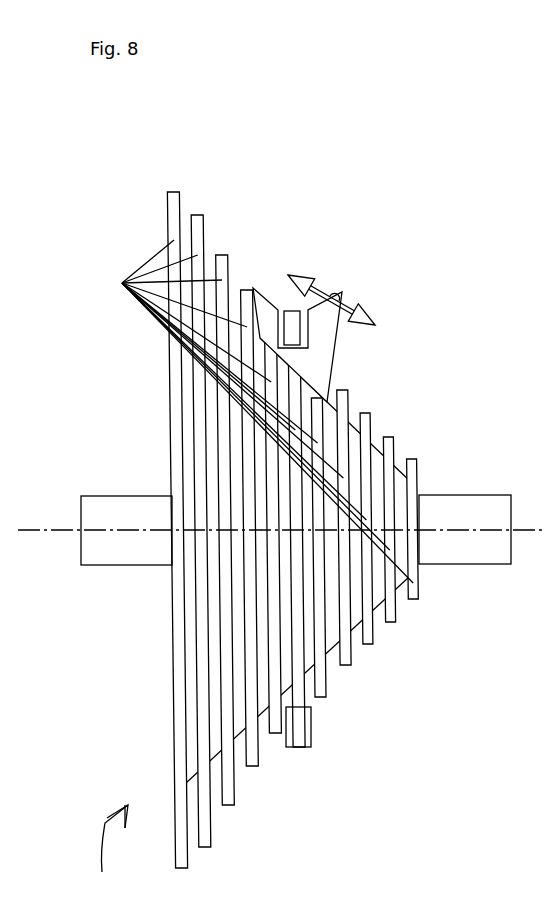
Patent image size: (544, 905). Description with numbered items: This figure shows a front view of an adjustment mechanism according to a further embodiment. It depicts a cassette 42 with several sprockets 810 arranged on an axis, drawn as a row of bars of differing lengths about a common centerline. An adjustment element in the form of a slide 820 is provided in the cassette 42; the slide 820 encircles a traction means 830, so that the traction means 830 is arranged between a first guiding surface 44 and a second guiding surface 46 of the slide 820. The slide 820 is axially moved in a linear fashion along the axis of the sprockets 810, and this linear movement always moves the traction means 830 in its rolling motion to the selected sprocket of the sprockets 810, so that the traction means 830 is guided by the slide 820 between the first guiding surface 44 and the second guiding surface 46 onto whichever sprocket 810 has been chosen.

The cassette 42 is at (102, 855).
The first guiding surface 44 is at (292, 322).
The second guiding surface 46 is at (286, 322).
The sprockets 810 is at (122, 283).
The slide 820 is at (318, 368).
The traction means 830 is at (298, 718).